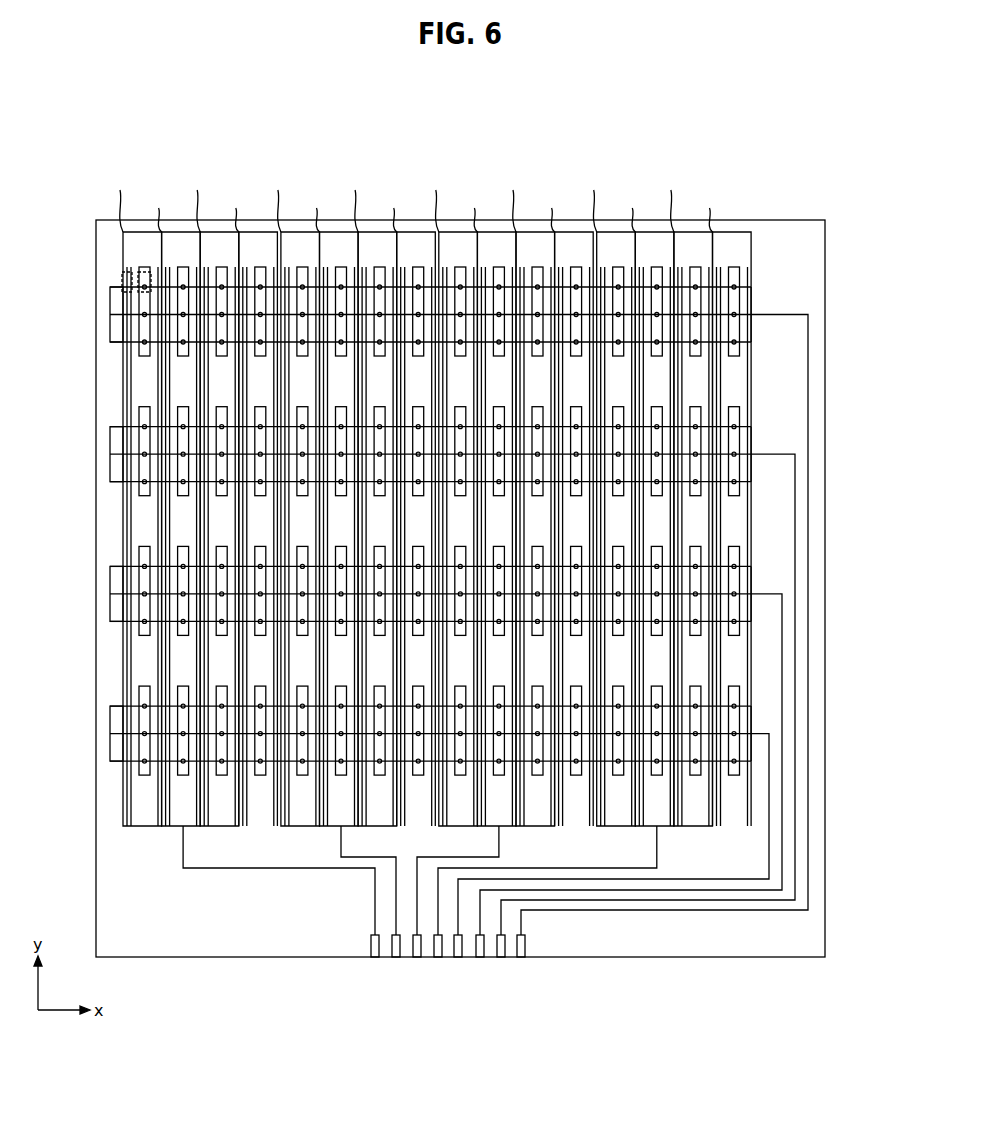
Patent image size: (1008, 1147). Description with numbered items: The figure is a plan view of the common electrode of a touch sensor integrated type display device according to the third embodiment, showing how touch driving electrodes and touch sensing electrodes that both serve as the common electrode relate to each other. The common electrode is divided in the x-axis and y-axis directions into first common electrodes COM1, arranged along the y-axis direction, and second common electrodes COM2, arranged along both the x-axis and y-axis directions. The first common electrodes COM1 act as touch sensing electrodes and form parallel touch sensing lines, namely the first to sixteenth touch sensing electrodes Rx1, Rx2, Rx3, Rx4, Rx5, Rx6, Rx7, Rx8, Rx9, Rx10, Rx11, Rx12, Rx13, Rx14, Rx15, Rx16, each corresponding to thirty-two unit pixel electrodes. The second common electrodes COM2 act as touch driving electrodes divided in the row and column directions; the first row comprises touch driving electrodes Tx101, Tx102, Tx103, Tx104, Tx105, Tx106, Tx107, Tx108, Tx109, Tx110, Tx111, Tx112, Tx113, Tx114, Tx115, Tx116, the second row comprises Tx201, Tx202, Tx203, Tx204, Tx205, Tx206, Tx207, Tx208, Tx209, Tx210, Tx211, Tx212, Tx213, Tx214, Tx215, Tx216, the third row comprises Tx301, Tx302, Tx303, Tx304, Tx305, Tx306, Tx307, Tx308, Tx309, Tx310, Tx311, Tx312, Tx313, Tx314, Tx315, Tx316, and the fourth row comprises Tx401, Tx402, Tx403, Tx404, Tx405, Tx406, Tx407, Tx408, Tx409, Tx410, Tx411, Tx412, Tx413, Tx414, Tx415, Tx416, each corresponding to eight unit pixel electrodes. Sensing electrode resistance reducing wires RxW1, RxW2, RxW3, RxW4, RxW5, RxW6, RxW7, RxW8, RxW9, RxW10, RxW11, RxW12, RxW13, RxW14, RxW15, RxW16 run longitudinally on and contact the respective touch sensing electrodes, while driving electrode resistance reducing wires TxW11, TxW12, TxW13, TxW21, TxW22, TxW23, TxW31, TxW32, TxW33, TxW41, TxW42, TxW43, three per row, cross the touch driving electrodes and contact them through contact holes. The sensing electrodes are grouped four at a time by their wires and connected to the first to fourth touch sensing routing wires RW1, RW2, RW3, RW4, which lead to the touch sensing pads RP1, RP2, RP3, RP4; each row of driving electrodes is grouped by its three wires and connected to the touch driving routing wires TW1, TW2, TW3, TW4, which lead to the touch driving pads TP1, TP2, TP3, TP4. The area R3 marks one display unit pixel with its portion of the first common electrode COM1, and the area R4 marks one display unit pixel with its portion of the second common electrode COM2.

The first common electrode COM1 is at (244, 120).
The second common electrode COM2 is at (402, 148).
The first touch sensing electrode Rx1 is at (132, 267).
The second touch sensing electrode Rx2 is at (171, 267).
The third touch sensing electrode Rx3 is at (209, 267).
The fourth touch sensing electrode Rx4 is at (248, 267).
The fifth touch sensing electrode Rx5 is at (290, 267).
The sixth touch sensing electrode Rx6 is at (328, 267).
The seventh touch sensing electrode Rx7 is at (367, 267).
The eighth touch sensing electrode Rx8 is at (406, 267).
The ninth touch sensing electrode Rx9 is at (448, 267).
The tenth touch sensing electrode Rx10 is at (486, 267).
The eleventh touch sensing electrode Rx11 is at (525, 267).
The twelfth touch sensing electrode Rx12 is at (564, 267).
The thirteenth touch sensing electrode Rx13 is at (606, 267).
The fourteenth touch sensing electrode Rx14 is at (644, 267).
The fifteenth touch sensing electrode Rx15 is at (683, 267).
The sixteenth touch sensing electrode Rx16 is at (722, 267).
The first touch driving electrode Tx101 is at (152, 373).
The first touch driving electrode Tx102 is at (191, 373).
The first touch driving electrode Tx103 is at (229, 373).
The first touch driving electrode Tx104 is at (268, 373).
The first touch driving electrode Tx105 is at (310, 373).
The first touch driving electrode Tx106 is at (348, 373).
The first touch driving electrode Tx107 is at (387, 373).
The first touch driving electrode Tx108 is at (426, 373).
The first touch driving electrode Tx109 is at (468, 373).
The first touch driving electrode Tx110 is at (506, 373).
The first touch driving electrode Tx111 is at (545, 373).
The first touch driving electrode Tx112 is at (584, 373).
The first touch driving electrode Tx113 is at (626, 373).
The first touch driving electrode Tx114 is at (664, 373).
The first touch driving electrode Tx115 is at (703, 373).
The first touch driving electrode Tx116 is at (742, 373).
The second touch driving electrode Tx201 is at (152, 513).
The second touch driving electrode Tx202 is at (191, 513).
The second touch driving electrode Tx203 is at (229, 513).
The second touch driving electrode Tx204 is at (268, 513).
The second touch driving electrode Tx205 is at (310, 513).
The second touch driving electrode Tx206 is at (348, 513).
The second touch driving electrode Tx207 is at (387, 513).
The second touch driving electrode Tx208 is at (426, 513).
The second touch driving electrode Tx209 is at (468, 513).
The second touch driving electrode Tx210 is at (506, 513).
The second touch driving electrode Tx211 is at (545, 513).
The second touch driving electrode Tx212 is at (584, 513).
The second touch driving electrode Tx213 is at (626, 513).
The second touch driving electrode Tx214 is at (664, 513).
The second touch driving electrode Tx215 is at (703, 513).
The second touch driving electrode Tx216 is at (742, 513).
The third touch driving electrode Tx301 is at (152, 652).
The third touch driving electrode Tx302 is at (191, 652).
The third touch driving electrode Tx303 is at (229, 652).
The third touch driving electrode Tx304 is at (268, 652).
The third touch driving electrode Tx305 is at (310, 652).
The third touch driving electrode Tx306 is at (348, 652).
The third touch driving electrode Tx307 is at (387, 652).
The third touch driving electrode Tx308 is at (426, 652).
The third touch driving electrode Tx309 is at (468, 652).
The third touch driving electrode Tx310 is at (506, 652).
The third touch driving electrode Tx311 is at (545, 652).
The third touch driving electrode Tx312 is at (584, 652).
The third touch driving electrode Tx313 is at (626, 652).
The third touch driving electrode Tx314 is at (664, 652).
The third touch driving electrode Tx315 is at (703, 652).
The third touch driving electrode Tx316 is at (742, 652).
The fourth touch driving electrode Tx401 is at (152, 792).
The fourth touch driving electrode Tx402 is at (191, 792).
The fourth touch driving electrode Tx403 is at (229, 792).
The fourth touch driving electrode Tx404 is at (268, 792).
The fourth touch driving electrode Tx405 is at (310, 792).
The fourth touch driving electrode Tx406 is at (348, 792).
The fourth touch driving electrode Tx407 is at (387, 792).
The fourth touch driving electrode Tx408 is at (426, 792).
The fourth touch driving electrode Tx409 is at (468, 792).
The fourth touch driving electrode Tx410 is at (506, 792).
The fourth touch driving electrode Tx411 is at (545, 792).
The fourth touch driving electrode Tx412 is at (584, 792).
The fourth touch driving electrode Tx413 is at (626, 792).
The fourth touch driving electrode Tx414 is at (664, 792).
The fourth touch driving electrode Tx415 is at (703, 792).
The fourth touch driving electrode Tx416 is at (742, 792).
The first sensing electrode resistance reducing wire RxW1 is at (117, 202).
The second sensing electrode resistance reducing wire RxW2 is at (156, 211).
The third sensing electrode resistance reducing wire RxW3 is at (195, 202).
The fourth sensing electrode resistance reducing wire RxW4 is at (233, 211).
The fifth sensing electrode resistance reducing wire RxW5 is at (275, 202).
The sixth sensing electrode resistance reducing wire RxW6 is at (314, 211).
The seventh sensing electrode resistance reducing wire RxW7 is at (352, 202).
The eighth sensing electrode resistance reducing wire RxW8 is at (391, 211).
The ninth sensing electrode resistance reducing wire RxW9 is at (433, 202).
The tenth sensing electrode resistance reducing wire RxW10 is at (472, 211).
The eleventh sensing electrode resistance reducing wire RxW11 is at (510, 202).
The twelfth sensing electrode resistance reducing wire RxW12 is at (549, 211).
The thirteenth sensing electrode resistance reducing wire RxW13 is at (591, 202).
The fourteenth sensing electrode resistance reducing wire RxW14 is at (630, 211).
The fifteenth sensing electrode resistance reducing wire RxW15 is at (668, 202).
The sixteenth sensing electrode resistance reducing wire RxW16 is at (707, 211).
The first driving electrode resistance reducing wire TxW11 is at (110, 287).
The first driving electrode resistance reducing wire TxW12 is at (110, 314).
The first driving electrode resistance reducing wire TxW13 is at (110, 342).
The second driving electrode resistance reducing wire TxW21 is at (110, 427).
The second driving electrode resistance reducing wire TxW22 is at (110, 454).
The second driving electrode resistance reducing wire TxW23 is at (110, 482).
The third driving electrode resistance reducing wire TxW31 is at (110, 566).
The third driving electrode resistance reducing wire TxW32 is at (110, 594).
The third driving electrode resistance reducing wire TxW33 is at (110, 621).
The fourth driving electrode resistance reducing wire TxW41 is at (110, 706).
The fourth driving electrode resistance reducing wire TxW42 is at (110, 734).
The fourth driving electrode resistance reducing wire TxW43 is at (110, 761).
The first touch driving routing wire TW1 is at (808, 358).
The second touch driving routing wire TW2 is at (795, 477).
The third touch driving routing wire TW3 is at (782, 605).
The fourth touch driving routing wire TW4 is at (769, 760).
The first touch sensing routing wire RW1 is at (187, 858).
The second touch sensing routing wire RW2 is at (344, 845).
The third touch sensing routing wire RW3 is at (502, 845).
The fourth touch sensing routing wire RW4 is at (660, 845).
The first touch sensing pad RP1 is at (375, 957).
The second touch sensing pad RP2 is at (396, 957).
The third touch sensing pad RP3 is at (417, 957).
The fourth touch sensing pad RP4 is at (438, 957).
The first touch driving pad TP1 is at (521, 957).
The second touch driving pad TP2 is at (501, 957).
The third touch driving pad TP3 is at (480, 957).
The fourth touch driving pad TP4 is at (458, 957).
The area R3 is at (138, 286).
The area R4 is at (122, 274).